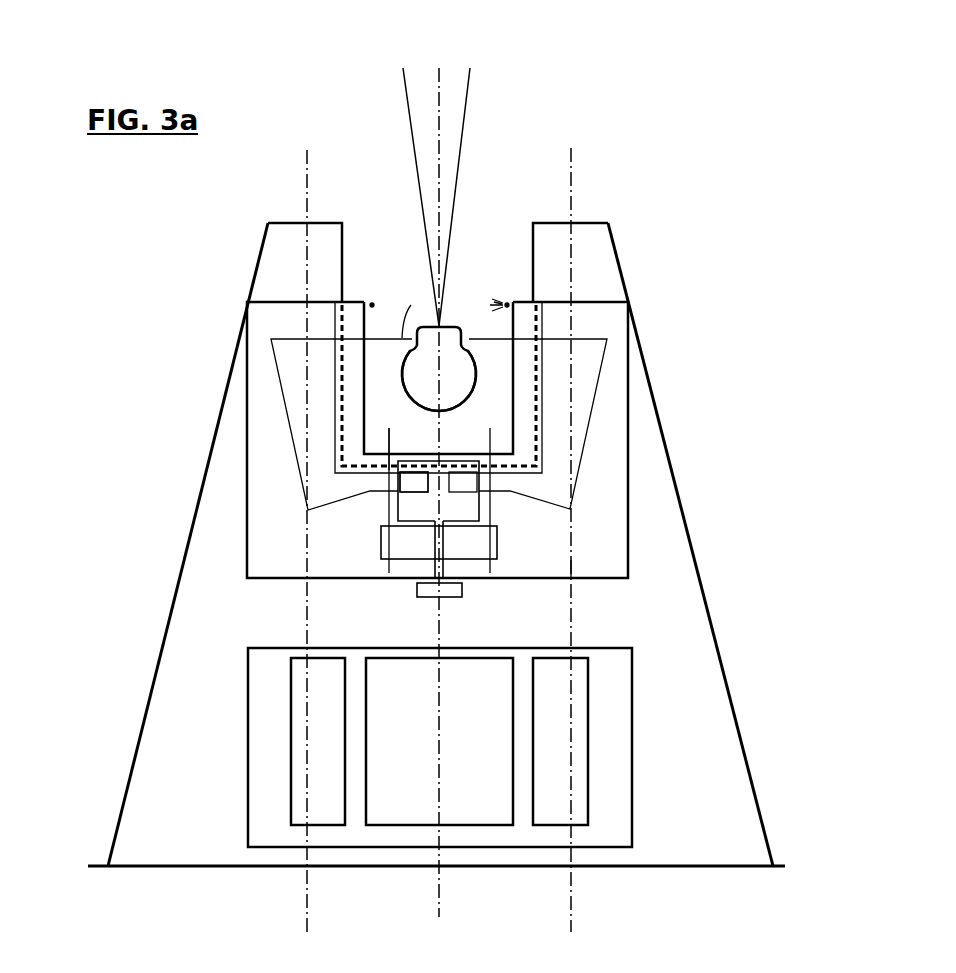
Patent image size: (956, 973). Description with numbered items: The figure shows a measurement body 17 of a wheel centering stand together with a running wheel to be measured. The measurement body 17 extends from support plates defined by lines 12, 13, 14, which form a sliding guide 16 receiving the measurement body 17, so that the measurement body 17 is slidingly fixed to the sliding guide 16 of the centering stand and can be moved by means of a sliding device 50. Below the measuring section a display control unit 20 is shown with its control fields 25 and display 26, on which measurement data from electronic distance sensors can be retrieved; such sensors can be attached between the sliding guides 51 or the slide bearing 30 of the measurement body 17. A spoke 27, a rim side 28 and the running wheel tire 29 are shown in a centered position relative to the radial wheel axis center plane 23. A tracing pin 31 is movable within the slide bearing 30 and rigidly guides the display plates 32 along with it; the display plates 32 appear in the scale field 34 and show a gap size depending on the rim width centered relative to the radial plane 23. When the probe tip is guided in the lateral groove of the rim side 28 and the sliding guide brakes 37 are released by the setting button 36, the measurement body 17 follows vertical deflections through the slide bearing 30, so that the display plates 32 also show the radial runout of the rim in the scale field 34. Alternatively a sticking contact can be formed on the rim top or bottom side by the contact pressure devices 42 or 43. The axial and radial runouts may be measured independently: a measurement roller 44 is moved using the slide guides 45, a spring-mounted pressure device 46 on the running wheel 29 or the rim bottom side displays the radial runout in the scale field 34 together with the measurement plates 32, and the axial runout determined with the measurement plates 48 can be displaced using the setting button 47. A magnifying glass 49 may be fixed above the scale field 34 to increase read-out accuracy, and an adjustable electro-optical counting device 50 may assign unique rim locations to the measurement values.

The line 12 is at (140, 868).
The line 13 is at (121, 802).
The line 14 is at (757, 797).
The sliding guide 16 is at (590, 245).
The measurement body 17 is at (612, 433).
The display control unit 20 is at (253, 818).
The radial wheel axis center plane 23 is at (440, 68).
The control field 25 is at (298, 815).
The display 26 is at (405, 803).
The spoke 27 is at (472, 86).
The rim side 28 is at (415, 345).
The running wheel tire 29 is at (412, 372).
The slide bearing 30 is at (368, 338).
The tracing pin 31 is at (407, 311).
The display plates 32 is at (583, 378).
The scale field 34 is at (458, 510).
The setting button 36 is at (447, 589).
The sliding guide brake 37 is at (570, 577).
The contact pressure device 42 is at (570, 283).
The contact pressure device 43 is at (570, 627).
The measurement roller 44 is at (502, 440).
The slide guide 45 is at (392, 447).
The pressure device 46 is at (305, 557).
The setting button 47 is at (443, 549).
The measurement plates 48 is at (478, 535).
The magnifying glass 49 is at (412, 503).
The sliding device 50 is at (372, 303).
The sliding guide 51 is at (307, 302).